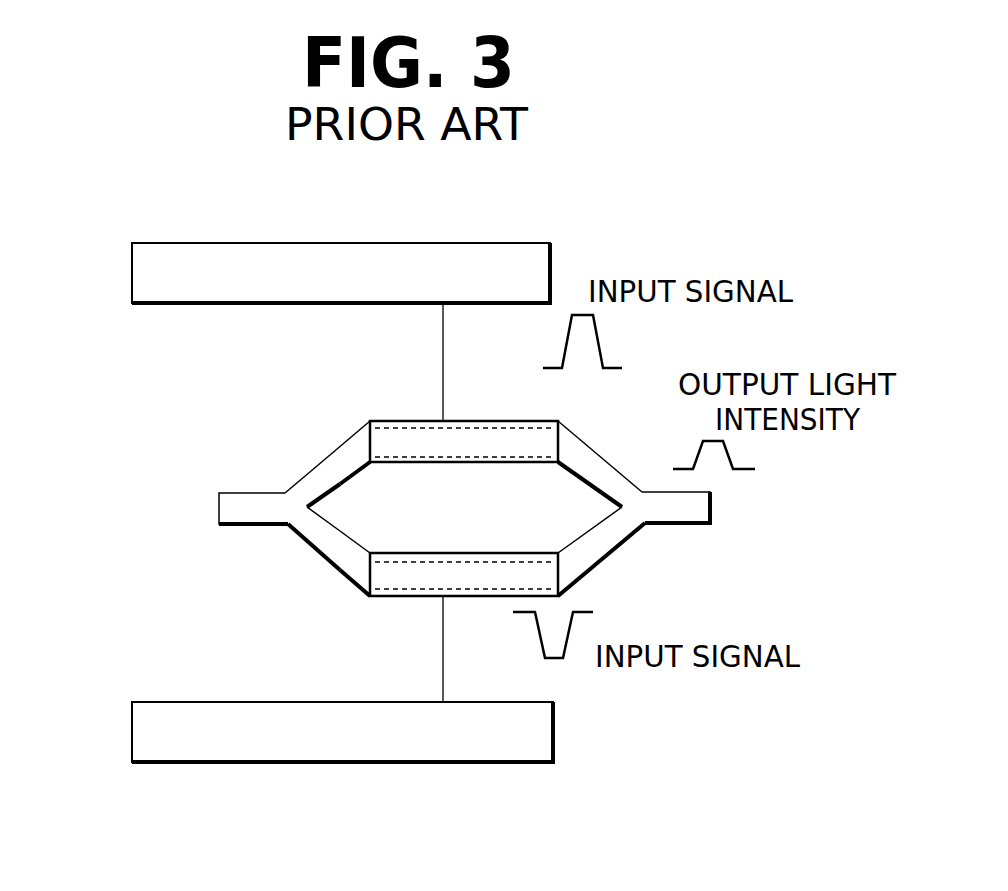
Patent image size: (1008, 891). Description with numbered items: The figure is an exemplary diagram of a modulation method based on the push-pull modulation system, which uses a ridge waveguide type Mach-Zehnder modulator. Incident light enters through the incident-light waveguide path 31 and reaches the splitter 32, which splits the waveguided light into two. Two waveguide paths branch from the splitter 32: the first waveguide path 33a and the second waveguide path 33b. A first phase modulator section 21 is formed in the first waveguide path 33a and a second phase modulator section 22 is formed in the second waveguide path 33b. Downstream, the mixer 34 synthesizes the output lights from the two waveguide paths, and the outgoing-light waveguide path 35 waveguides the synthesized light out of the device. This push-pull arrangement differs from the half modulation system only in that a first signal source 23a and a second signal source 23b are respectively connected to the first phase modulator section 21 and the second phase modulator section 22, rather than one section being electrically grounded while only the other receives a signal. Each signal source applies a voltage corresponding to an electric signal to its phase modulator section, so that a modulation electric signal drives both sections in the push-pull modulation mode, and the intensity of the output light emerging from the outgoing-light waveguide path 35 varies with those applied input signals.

The first phase modulator section 21 is at (428, 552).
The second phase modulator section 22 is at (486, 420).
The first signal source 23a is at (132, 722).
The second signal source 23b is at (132, 265).
The incident-light waveguide path 31 is at (233, 517).
The splitter 32 is at (290, 507).
The first waveguide path 33a is at (347, 578).
The second waveguide path 33b is at (342, 433).
The mixer 34 is at (637, 503).
The outgoing-light waveguide path 35 is at (680, 515).